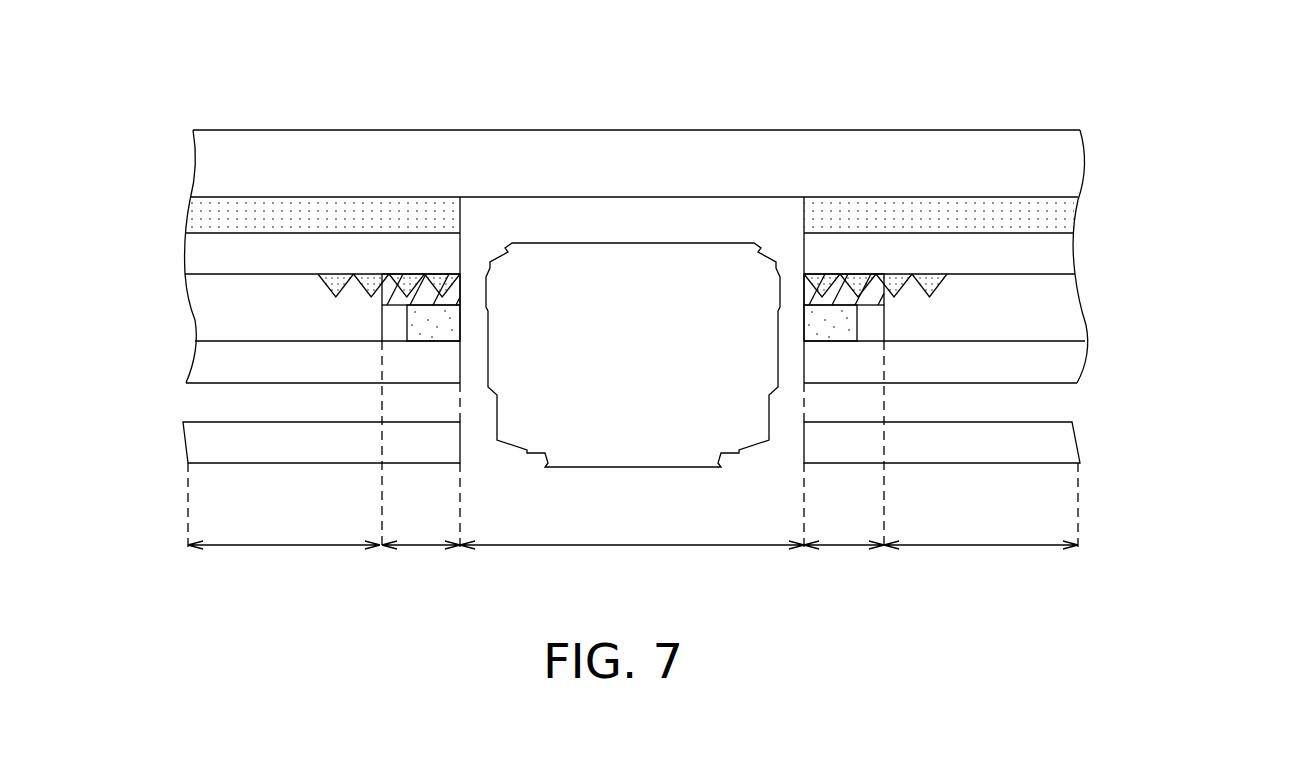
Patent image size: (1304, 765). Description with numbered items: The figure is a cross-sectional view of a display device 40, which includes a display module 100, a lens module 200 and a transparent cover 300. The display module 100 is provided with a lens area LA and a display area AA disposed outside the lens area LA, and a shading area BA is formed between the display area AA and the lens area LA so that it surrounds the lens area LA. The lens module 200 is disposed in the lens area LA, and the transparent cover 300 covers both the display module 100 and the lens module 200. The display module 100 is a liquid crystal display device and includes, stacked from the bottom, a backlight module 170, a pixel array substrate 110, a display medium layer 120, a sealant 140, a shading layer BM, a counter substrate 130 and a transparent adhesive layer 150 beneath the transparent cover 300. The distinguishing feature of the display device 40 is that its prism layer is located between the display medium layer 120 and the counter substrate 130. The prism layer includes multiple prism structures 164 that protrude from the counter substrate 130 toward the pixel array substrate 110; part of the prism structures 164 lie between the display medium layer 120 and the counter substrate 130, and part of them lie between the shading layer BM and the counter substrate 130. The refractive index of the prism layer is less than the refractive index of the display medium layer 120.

The transparent cover 300 is at (1068, 148).
The transparent adhesive layer 150 is at (1068, 215).
The counter substrate 130 is at (1062, 256).
The shading layer BM is at (870, 296).
The prism structures 164 is at (367, 282).
The display medium layer 120 is at (1060, 316).
The sealant 140 is at (857, 320).
The pixel array substrate 110 is at (1055, 368).
The backlight module 170 is at (1050, 447).
The lens module 200 is at (693, 243).
The display module 100 is at (156, 197).
The display device 40 is at (1196, 558).
The display area AA is at (633, 530).
The shading area BA is at (633, 530).
The lens area LA is at (632, 530).